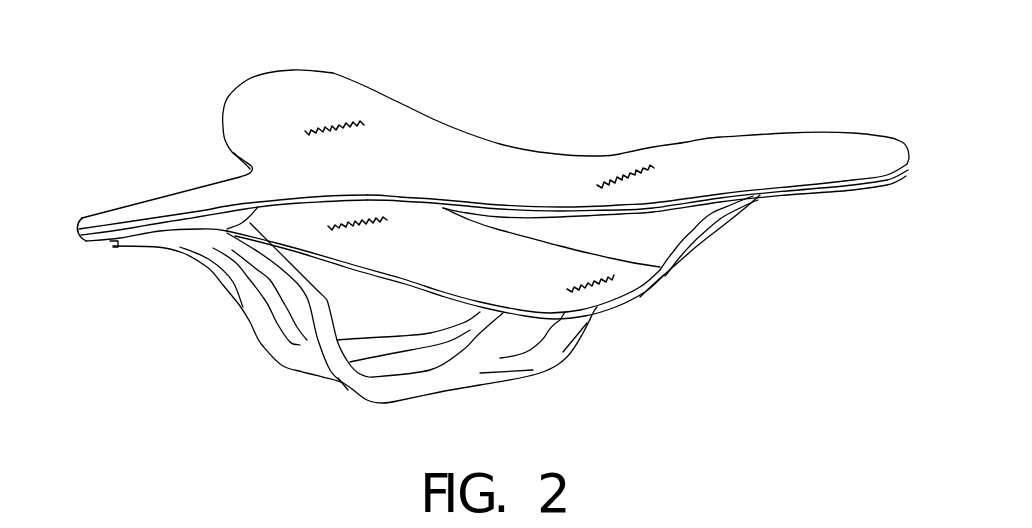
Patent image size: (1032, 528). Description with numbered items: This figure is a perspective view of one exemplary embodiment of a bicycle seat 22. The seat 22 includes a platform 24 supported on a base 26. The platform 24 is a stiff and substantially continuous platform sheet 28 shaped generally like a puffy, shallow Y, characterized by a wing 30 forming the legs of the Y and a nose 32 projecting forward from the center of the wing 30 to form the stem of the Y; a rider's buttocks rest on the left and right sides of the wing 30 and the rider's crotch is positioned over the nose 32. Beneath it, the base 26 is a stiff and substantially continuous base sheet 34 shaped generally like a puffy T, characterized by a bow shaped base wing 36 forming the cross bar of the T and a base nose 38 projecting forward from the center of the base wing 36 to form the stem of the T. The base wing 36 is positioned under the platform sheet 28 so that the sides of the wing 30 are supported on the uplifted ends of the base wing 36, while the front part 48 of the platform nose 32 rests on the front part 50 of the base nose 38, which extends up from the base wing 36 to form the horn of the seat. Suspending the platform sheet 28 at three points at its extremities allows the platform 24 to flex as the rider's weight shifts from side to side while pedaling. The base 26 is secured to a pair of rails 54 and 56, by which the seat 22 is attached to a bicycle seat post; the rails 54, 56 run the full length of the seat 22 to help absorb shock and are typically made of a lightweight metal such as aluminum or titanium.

The seat 22 is at (776, 108).
The platform 24 is at (235, 110).
The base 26 is at (712, 228).
The platform sheet 28 is at (492, 213).
The wing 30 is at (488, 157).
The nose 32 is at (128, 212).
The base sheet 34 is at (618, 305).
The base wing 36 is at (562, 257).
The base nose 38 is at (112, 247).
The front part of platform nose 48 is at (83, 222).
The front part of base nose 50 is at (86, 244).
The rail 54 is at (282, 353).
The rail 56 is at (347, 383).